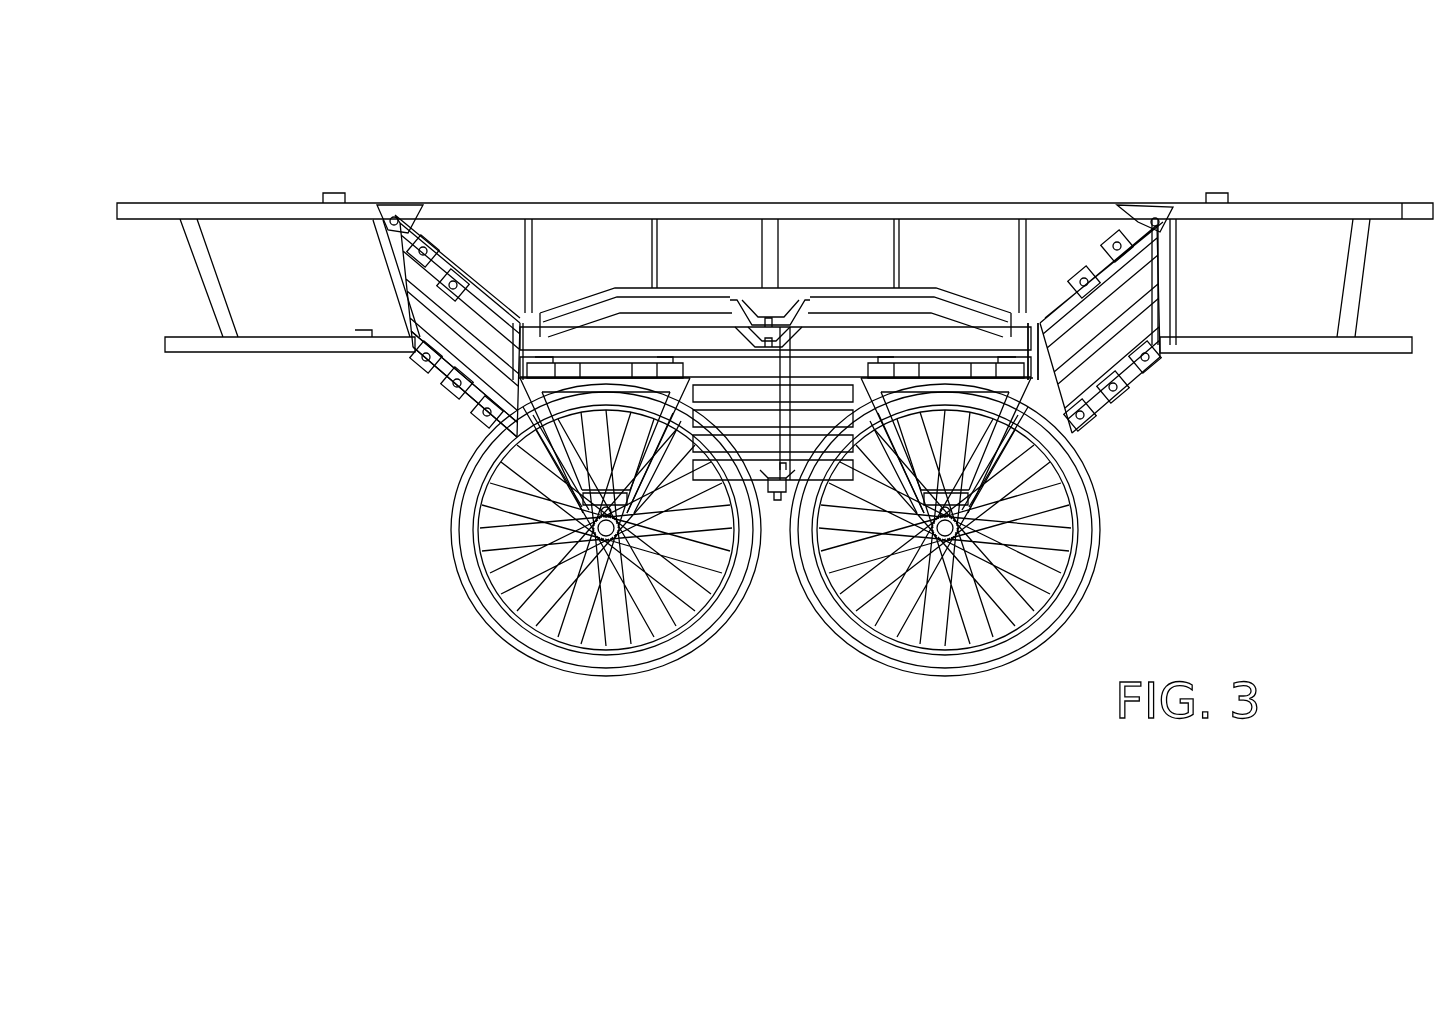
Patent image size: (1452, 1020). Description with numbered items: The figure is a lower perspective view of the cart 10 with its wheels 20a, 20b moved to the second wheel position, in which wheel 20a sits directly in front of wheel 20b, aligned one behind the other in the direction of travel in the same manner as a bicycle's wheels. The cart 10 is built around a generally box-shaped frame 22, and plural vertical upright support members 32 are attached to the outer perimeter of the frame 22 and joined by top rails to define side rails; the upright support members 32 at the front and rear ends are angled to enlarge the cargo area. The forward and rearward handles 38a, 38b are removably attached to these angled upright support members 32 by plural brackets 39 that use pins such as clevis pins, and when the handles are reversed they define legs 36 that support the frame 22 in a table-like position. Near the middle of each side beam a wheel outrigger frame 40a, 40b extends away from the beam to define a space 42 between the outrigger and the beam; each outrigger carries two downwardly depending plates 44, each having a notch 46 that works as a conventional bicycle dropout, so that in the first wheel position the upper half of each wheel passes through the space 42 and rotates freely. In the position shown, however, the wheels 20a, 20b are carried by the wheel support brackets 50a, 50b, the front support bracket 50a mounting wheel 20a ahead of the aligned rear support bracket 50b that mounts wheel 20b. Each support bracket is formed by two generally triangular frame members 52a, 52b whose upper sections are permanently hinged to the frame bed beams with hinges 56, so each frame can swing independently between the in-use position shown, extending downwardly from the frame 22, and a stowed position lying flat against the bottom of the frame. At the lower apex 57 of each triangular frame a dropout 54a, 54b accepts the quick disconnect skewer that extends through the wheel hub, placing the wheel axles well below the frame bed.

The cart 10 is at (527, 133).
The legs 36 is at (152, 203).
The rearward handle 38b is at (255, 202).
The forward handle 38a is at (1292, 202).
The brackets 39 is at (410, 250).
The frame 22 is at (425, 392).
The upright support members 32 is at (520, 250).
The wheel outrigger frame 40b is at (922, 255).
The space 42 is at (815, 313).
The plates 44 is at (750, 315).
The notch 46 is at (772, 318).
The hinges 56 is at (641, 368).
The wheel outrigger frame 40a is at (777, 505).
The wheel support bracket 50b is at (457, 435).
The wheel support bracket 50a is at (1108, 452).
The triangular frame member 52a is at (565, 457).
The triangular frame member 52b is at (662, 470).
The dropout 54b is at (580, 507).
The dropout 54a is at (967, 518).
The lower apex 57 is at (620, 512).
The wheel 20b is at (568, 700).
The wheel 20a is at (911, 700).